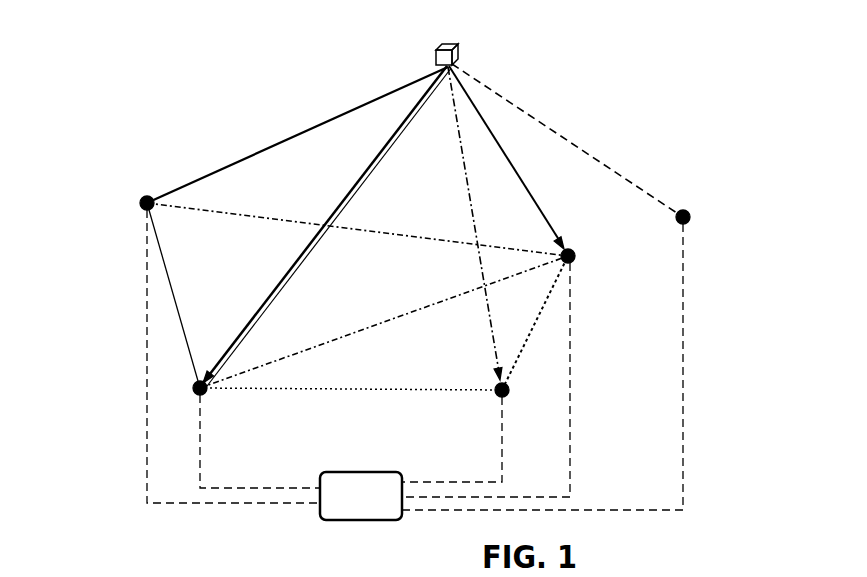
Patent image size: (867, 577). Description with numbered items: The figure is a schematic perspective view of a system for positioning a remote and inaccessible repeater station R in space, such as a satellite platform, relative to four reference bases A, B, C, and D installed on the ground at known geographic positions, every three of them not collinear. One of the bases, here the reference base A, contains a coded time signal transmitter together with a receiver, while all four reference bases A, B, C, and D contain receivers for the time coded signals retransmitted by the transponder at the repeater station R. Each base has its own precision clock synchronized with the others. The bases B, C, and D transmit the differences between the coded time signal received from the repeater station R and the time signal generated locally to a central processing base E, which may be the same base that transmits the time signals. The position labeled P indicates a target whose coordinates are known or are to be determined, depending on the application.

The repeater station R is at (447, 40).
The reference base A is at (255, 406).
The reference base B is at (93, 213).
The reference base C is at (621, 263).
The reference base D is at (450, 406).
The target P is at (736, 226).
The central processing base E is at (361, 496).